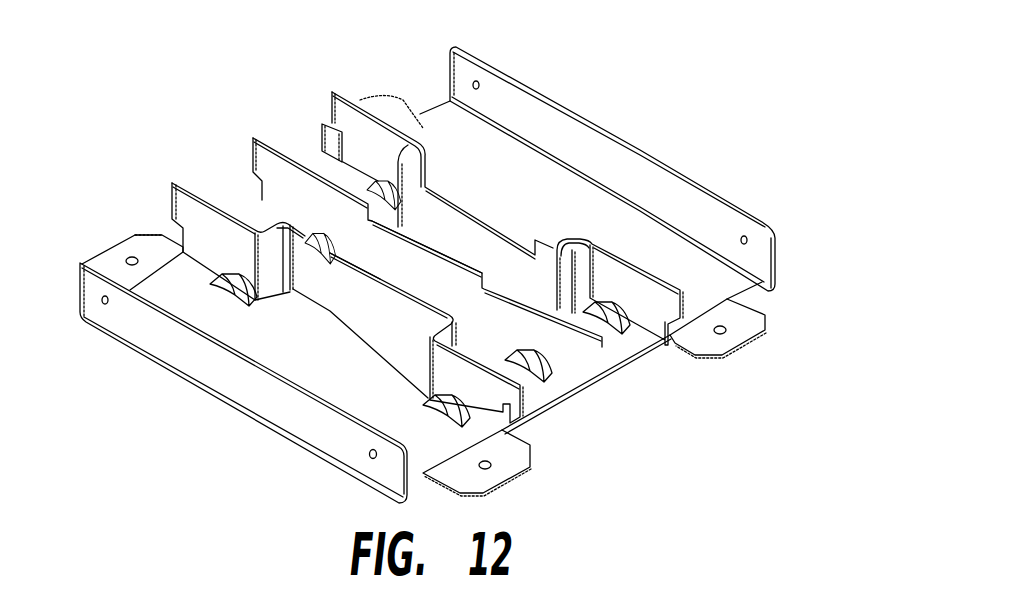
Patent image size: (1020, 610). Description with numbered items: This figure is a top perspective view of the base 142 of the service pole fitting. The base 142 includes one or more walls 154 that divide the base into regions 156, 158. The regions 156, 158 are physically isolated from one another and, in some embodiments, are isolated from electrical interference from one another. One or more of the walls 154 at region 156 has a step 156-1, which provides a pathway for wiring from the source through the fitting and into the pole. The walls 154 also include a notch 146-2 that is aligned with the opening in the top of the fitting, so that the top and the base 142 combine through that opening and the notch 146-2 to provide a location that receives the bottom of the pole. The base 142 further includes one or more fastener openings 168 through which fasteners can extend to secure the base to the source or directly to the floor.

The base 142 is at (640, 104).
The walls 154 is at (172, 183).
The region 156 is at (692, 257).
The step 156-1 is at (355, 298).
The notch 146-2 is at (378, 288).
The region 158 is at (620, 349).
The fastener openings 168 is at (132, 257).